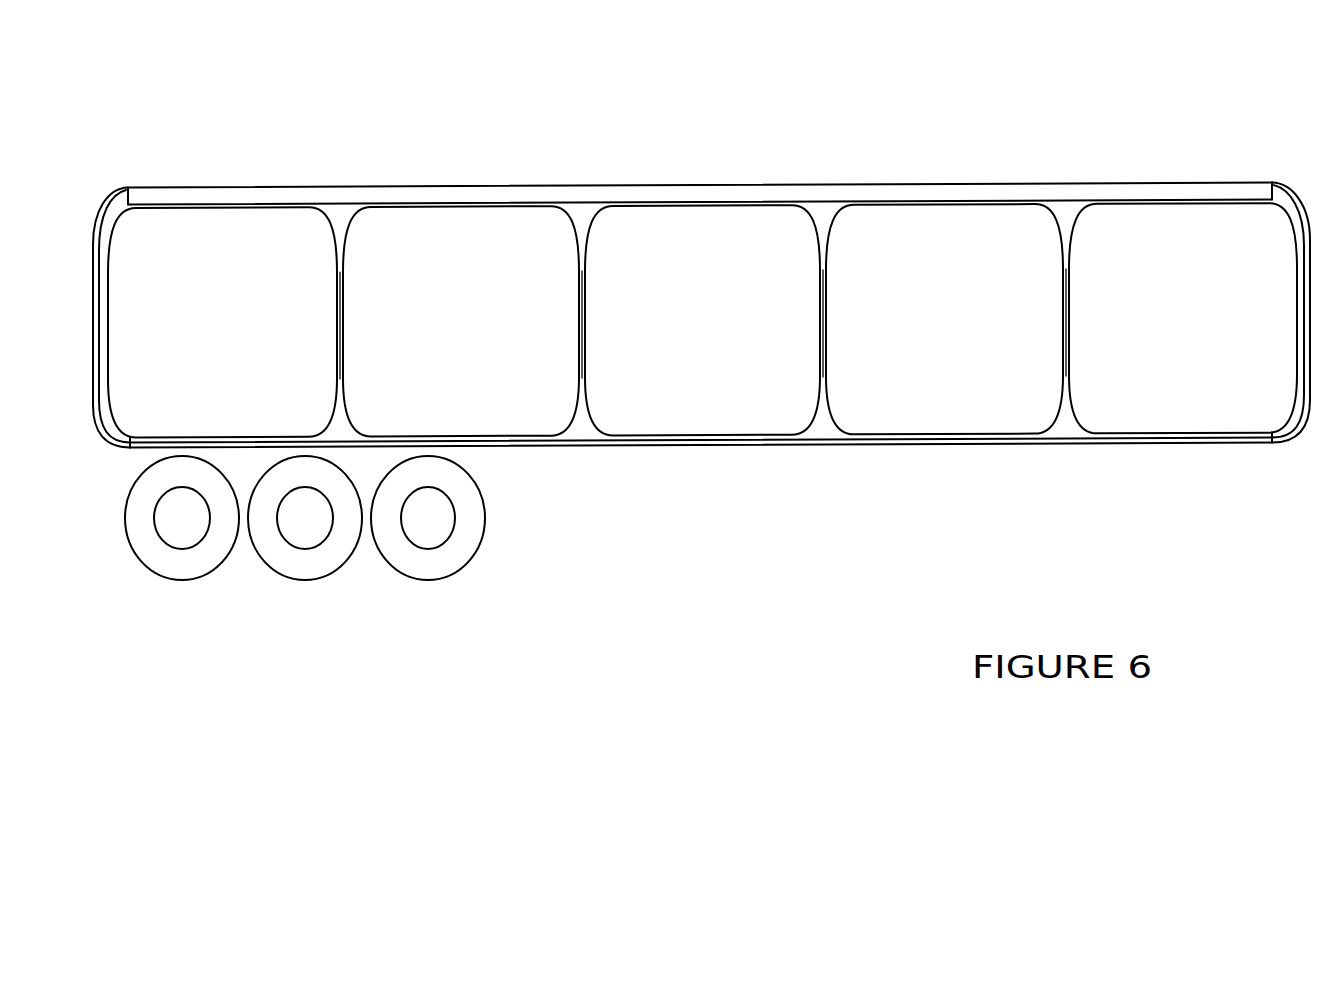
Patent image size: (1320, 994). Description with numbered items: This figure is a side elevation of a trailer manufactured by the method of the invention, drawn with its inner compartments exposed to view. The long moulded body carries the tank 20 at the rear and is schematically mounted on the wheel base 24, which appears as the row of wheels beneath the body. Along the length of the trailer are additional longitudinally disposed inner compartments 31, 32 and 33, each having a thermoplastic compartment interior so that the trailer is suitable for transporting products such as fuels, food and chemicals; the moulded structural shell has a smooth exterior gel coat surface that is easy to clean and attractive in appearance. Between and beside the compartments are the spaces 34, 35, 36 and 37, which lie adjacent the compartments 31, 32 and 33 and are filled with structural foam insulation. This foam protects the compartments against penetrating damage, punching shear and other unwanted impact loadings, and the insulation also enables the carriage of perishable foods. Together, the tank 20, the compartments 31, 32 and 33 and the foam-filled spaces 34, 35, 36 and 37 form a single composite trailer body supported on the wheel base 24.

The tank 20 is at (187, 228).
The wheel base 24 is at (445, 565).
The inner compartment 31 is at (528, 405).
The inner compartment 32 is at (700, 408).
The inner compartment 33 is at (908, 398).
The space 34 is at (345, 210).
The space 35 is at (583, 213).
The space 36 is at (820, 215).
The space 37 is at (1060, 207).